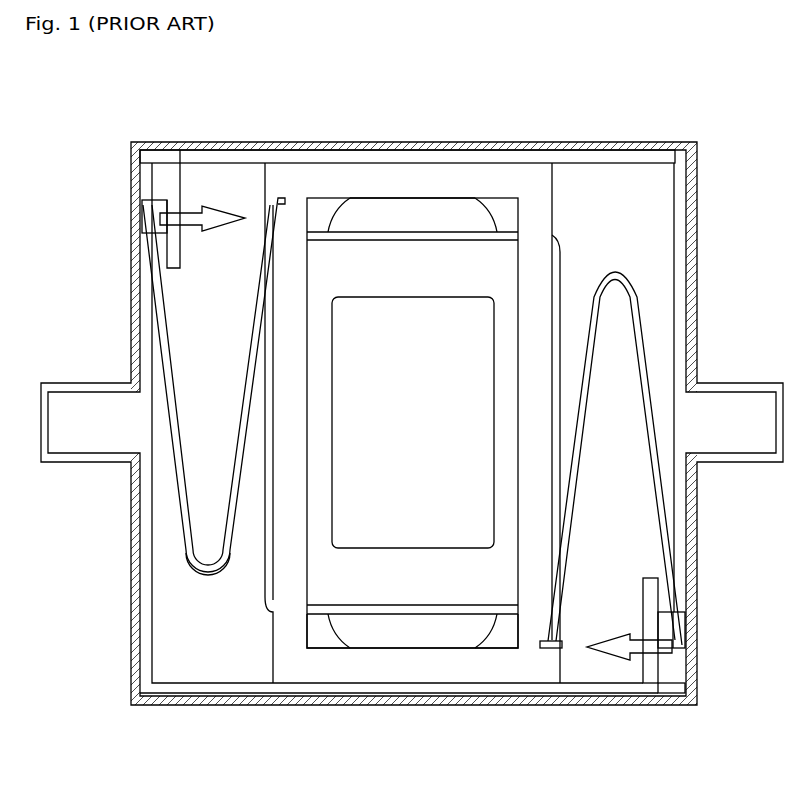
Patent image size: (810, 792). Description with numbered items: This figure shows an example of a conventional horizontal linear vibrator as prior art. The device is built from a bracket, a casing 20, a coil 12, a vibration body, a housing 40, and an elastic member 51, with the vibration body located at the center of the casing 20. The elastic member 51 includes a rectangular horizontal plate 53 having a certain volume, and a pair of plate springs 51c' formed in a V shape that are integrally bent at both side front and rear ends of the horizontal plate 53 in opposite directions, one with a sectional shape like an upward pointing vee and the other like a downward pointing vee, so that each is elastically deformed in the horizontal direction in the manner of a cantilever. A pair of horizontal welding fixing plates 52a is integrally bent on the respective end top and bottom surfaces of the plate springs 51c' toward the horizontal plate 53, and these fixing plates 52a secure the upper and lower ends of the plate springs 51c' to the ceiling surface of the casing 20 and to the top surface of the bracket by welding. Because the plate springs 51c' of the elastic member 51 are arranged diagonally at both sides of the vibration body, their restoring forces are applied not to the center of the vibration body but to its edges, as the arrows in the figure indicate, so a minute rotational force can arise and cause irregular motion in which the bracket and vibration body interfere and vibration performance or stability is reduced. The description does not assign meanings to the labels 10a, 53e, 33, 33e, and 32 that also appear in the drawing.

The fixing protrusion 10a is at (151, 158).
The casing 20 is at (210, 173).
The horizontal plate 53 is at (328, 176).
The coil 12 is at (410, 207).
The end portion of upper plate 53e is at (507, 209).
The body 33 is at (500, 271).
The inner chamber of body 33e is at (458, 371).
The housing 40 is at (561, 482).
The plate spring 51c' is at (146, 546).
The elastic member 51 is at (208, 575).
The lower part of body 32 is at (405, 515).
The horizontal welding fixing plate 52a is at (673, 691).